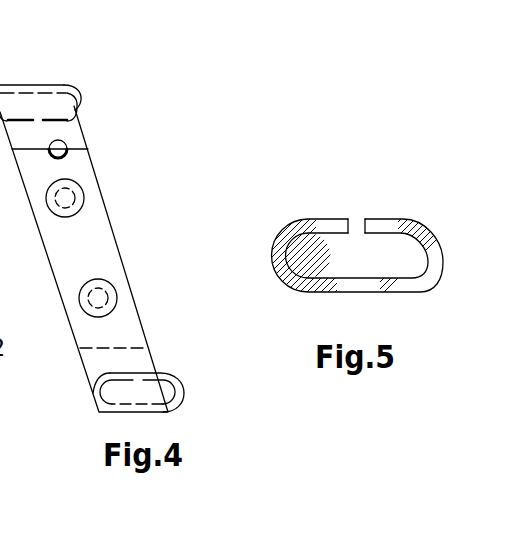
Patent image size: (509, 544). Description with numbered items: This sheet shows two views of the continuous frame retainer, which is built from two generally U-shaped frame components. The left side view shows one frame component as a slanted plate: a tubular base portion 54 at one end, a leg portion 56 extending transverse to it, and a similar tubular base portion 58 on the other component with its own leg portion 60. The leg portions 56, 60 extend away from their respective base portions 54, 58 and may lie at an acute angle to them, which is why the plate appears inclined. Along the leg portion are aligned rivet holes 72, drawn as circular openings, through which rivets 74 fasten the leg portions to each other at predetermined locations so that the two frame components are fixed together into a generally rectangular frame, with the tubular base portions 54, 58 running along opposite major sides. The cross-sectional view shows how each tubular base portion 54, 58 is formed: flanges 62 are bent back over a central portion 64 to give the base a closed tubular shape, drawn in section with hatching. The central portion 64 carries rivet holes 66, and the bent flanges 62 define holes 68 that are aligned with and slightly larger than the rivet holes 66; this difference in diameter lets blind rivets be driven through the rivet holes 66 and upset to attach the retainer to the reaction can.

In FIG. 4, the base portion 54 is at (84, 83).
In FIG. 4, the leg portions 56 is at (76, 131).
In FIG. 4, the base portion 58 is at (187, 400).
In FIG. 5, the base portion 58 is at (432, 287).
In FIG. 4, the leg portions 60 is at (97, 246).
In FIG. 5, the flanges 62 is at (306, 229).
In FIG. 5, the central portion 64 is at (309, 289).
In FIG. 5, the rivet holes 66 is at (380, 281).
In FIG. 5, the holes 68 is at (390, 221).
In FIG. 4, the rivet holes 72 is at (76, 200).
In FIG. 4, the rivets 74 is at (78, 184).